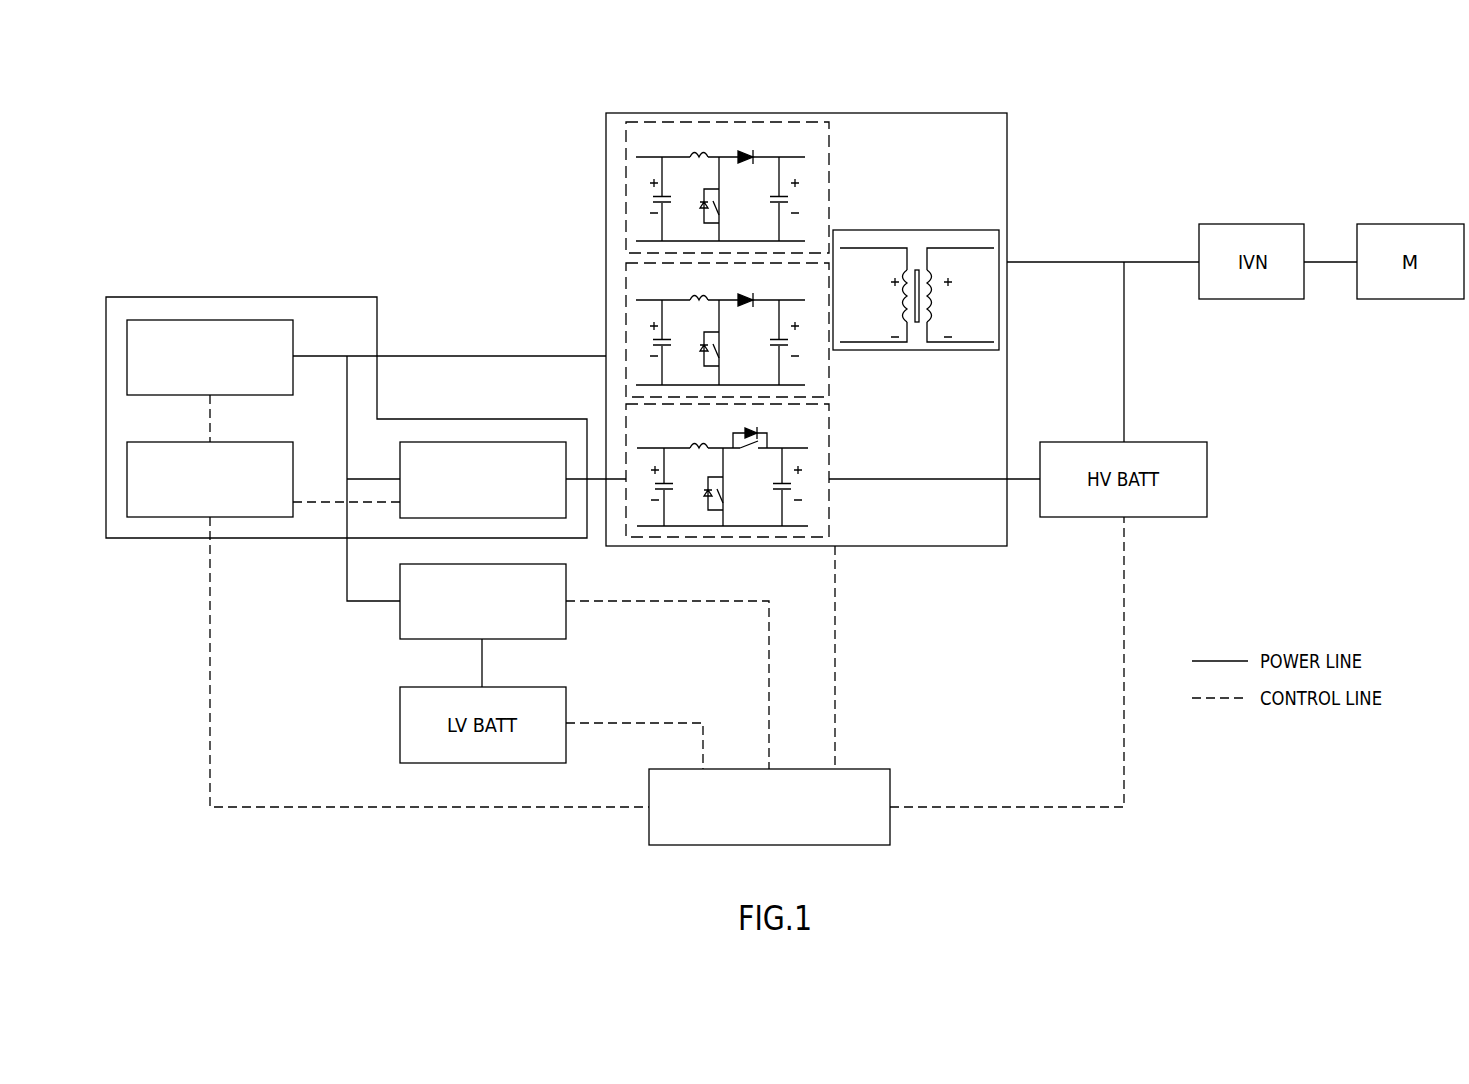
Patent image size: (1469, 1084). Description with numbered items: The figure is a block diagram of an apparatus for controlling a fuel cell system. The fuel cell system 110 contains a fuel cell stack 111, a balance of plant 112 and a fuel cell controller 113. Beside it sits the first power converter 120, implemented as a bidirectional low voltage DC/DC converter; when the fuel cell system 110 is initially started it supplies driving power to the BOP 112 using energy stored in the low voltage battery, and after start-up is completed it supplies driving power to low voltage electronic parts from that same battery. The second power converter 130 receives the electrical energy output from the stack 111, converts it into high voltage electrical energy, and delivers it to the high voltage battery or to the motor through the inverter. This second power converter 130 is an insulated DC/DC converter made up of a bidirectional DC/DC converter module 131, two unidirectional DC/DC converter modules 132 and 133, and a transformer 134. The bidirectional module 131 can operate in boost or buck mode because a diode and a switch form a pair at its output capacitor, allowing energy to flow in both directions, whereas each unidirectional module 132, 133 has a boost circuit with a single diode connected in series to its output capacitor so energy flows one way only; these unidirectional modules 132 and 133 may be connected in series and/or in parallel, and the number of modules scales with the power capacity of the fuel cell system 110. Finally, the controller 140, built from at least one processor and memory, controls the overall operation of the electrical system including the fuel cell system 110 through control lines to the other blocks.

The fuel cell system 110 is at (268, 297).
The fuel cell stack 111 is at (195, 382).
The balance of plant 112 is at (468, 504).
The fuel cell controller 113 is at (195, 513).
The first power converter 120 is at (468, 626).
The second power converter 130 is at (806, 113).
The bidirectional DC/DC converter module 131 is at (829, 447).
The unidirectional DC/DC converter module 132 is at (829, 373).
The unidirectional DC/DC converter module 133 is at (829, 170).
The transformer 134 is at (938, 230).
The controller 140 is at (755, 830).